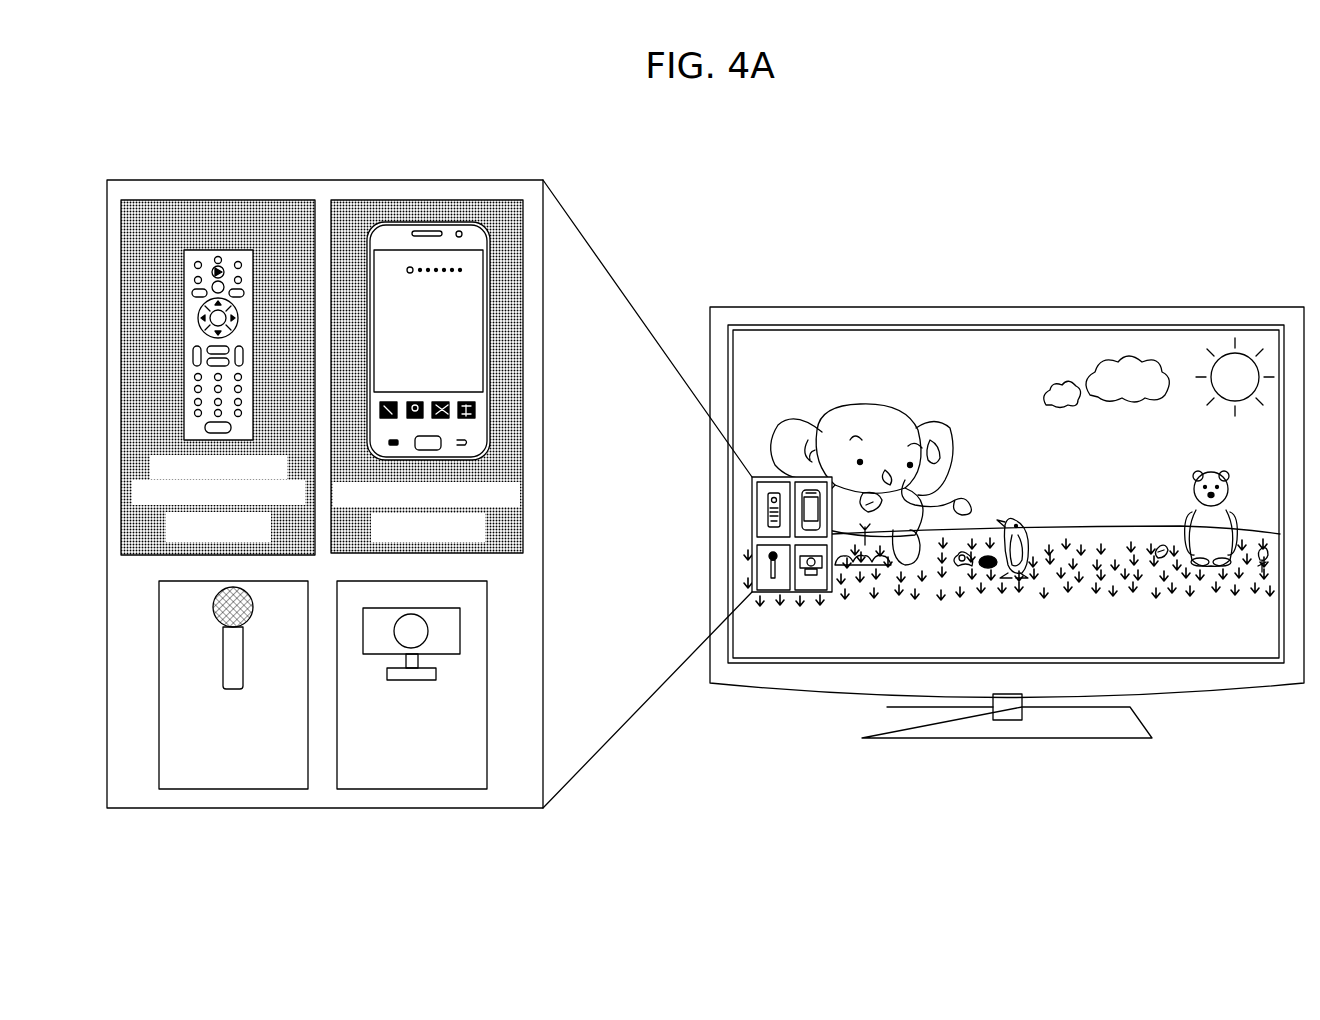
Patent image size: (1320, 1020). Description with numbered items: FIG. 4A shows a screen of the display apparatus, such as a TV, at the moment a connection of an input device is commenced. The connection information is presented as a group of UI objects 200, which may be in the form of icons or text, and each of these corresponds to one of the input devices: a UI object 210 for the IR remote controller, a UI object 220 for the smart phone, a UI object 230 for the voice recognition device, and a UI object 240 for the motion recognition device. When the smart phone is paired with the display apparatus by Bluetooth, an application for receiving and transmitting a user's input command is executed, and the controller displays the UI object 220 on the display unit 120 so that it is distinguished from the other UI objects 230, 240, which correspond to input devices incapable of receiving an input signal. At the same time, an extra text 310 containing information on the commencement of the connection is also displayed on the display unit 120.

The display unit 120 is at (1005, 307).
The UI objects 200 is at (318, 180).
The UI object corresponding to IR remote controller 210 is at (221, 200).
The UI object corresponding to smart phone 220 is at (423, 200).
The UI object corresponding to voice recognition device 230 is at (234, 790).
The UI object corresponding to motion recognition device 240 is at (412, 790).
The extra text 310 is at (1198, 648).